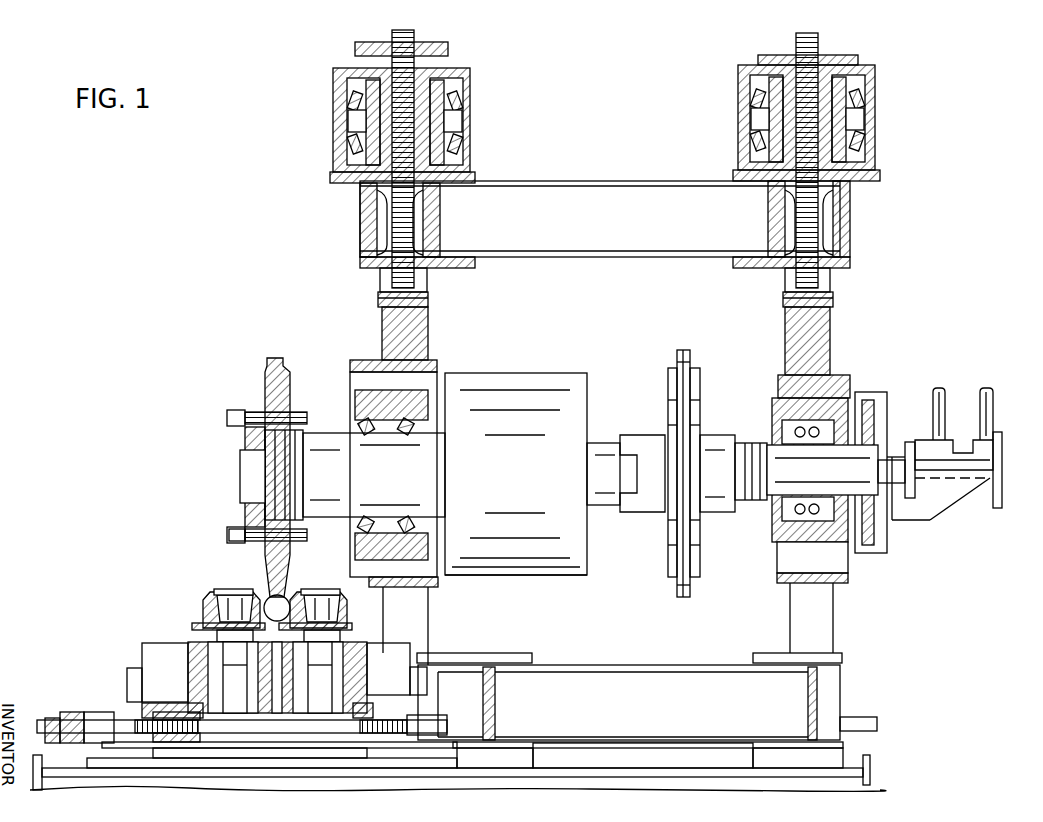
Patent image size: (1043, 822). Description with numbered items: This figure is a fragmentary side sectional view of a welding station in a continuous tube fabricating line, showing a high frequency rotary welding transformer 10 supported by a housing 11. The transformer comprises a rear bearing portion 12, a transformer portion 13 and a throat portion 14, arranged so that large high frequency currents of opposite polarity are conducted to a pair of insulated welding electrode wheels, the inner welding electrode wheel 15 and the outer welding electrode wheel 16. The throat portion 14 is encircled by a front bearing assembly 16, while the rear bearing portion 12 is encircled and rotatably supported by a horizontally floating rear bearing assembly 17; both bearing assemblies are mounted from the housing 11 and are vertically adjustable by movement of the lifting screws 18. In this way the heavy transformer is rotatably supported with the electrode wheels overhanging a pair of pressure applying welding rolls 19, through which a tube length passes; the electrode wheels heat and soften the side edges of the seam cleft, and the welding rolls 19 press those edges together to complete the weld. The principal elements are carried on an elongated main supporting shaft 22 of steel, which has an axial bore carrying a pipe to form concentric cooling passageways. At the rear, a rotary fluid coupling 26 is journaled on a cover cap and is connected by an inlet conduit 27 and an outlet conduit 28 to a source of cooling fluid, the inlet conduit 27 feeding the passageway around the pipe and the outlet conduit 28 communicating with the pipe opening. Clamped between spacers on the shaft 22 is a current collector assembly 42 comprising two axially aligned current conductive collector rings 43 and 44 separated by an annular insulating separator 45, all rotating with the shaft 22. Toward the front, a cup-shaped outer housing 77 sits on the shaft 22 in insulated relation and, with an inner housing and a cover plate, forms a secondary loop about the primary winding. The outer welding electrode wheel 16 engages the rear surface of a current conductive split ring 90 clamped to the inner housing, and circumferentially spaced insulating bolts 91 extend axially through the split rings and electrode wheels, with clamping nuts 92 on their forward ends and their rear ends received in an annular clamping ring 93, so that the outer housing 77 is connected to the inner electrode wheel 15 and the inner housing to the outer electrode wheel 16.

The high frequency rotary welding transformer 10 is at (598, 348).
The housing 11 is at (613, 184).
The rear bearing portion 12 is at (845, 468).
The transformer portion 13 is at (500, 383).
The throat portion 14 is at (385, 442).
The inner welding electrode wheel 15 is at (277, 370).
The front bearing assembly 16 is at (400, 398).
The rear bearing assembly 17 is at (820, 400).
The lifting screws 18 is at (400, 207).
The pressure applying welding rolls 19 is at (207, 605).
The main supporting shaft 22 is at (771, 494).
The rotary fluid coupling 26 is at (983, 505).
The inlet conduit 27 is at (939, 394).
The outlet conduit 28 is at (986, 394).
The current collector assembly 42 is at (708, 386).
The current conductive collector ring 43 is at (668, 370).
The current conductive collector ring 44 is at (696, 558).
The annular insulating separator 45 is at (683, 362).
The outer housing 77 is at (487, 575).
The split ring 90 is at (250, 452).
The insulating bolts 91 is at (252, 433).
The clamping nuts 92 is at (238, 532).
The annular clamping ring 93 is at (292, 418).